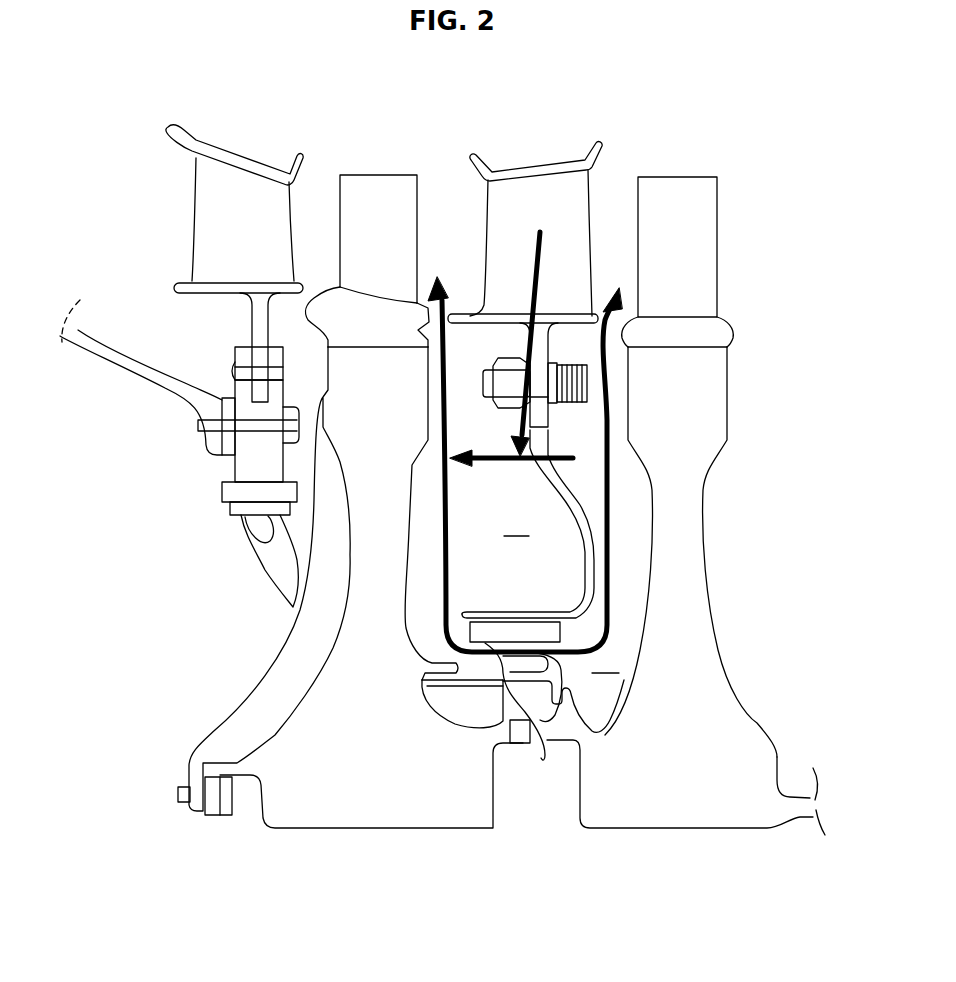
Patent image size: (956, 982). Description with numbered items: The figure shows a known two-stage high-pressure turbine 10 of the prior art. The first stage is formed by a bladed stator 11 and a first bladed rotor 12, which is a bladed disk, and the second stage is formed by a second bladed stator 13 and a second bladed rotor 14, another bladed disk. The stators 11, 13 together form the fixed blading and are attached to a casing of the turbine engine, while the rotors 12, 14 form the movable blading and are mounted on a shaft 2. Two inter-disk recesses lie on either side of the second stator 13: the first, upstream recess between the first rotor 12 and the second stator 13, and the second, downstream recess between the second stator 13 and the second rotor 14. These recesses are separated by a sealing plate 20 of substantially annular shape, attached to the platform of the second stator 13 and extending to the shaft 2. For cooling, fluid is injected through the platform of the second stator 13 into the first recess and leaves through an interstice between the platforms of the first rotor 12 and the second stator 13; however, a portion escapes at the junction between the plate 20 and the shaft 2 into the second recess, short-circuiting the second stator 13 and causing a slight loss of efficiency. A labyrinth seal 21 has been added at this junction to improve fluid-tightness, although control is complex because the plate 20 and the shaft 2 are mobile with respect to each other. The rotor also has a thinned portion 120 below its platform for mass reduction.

The two-stage turbine 10 is at (105, 188).
The bladed stator 11 is at (297, 246).
The first bladed rotor 12 is at (420, 245).
The second bladed stator 13 is at (596, 245).
The second bladed rotor 14 is at (722, 245).
The sealing plate 20 is at (586, 553).
The labyrinth seal 21 is at (554, 715).
The thinned portion 120 is at (367, 570).
The shaft 2 is at (256, 816).